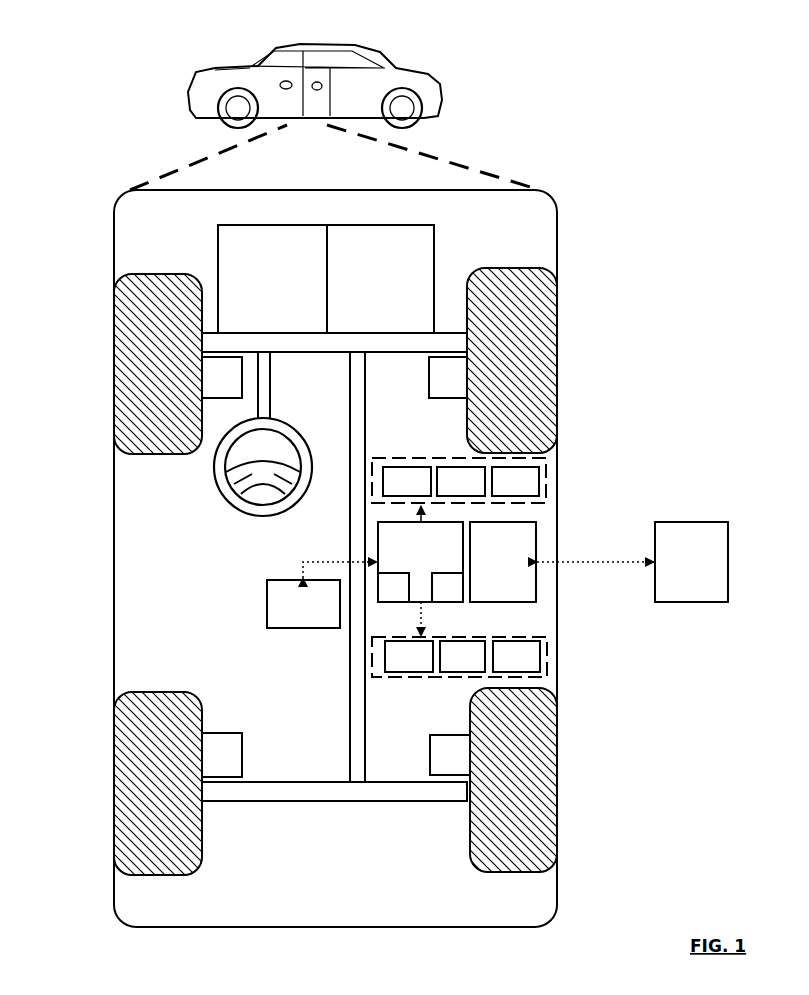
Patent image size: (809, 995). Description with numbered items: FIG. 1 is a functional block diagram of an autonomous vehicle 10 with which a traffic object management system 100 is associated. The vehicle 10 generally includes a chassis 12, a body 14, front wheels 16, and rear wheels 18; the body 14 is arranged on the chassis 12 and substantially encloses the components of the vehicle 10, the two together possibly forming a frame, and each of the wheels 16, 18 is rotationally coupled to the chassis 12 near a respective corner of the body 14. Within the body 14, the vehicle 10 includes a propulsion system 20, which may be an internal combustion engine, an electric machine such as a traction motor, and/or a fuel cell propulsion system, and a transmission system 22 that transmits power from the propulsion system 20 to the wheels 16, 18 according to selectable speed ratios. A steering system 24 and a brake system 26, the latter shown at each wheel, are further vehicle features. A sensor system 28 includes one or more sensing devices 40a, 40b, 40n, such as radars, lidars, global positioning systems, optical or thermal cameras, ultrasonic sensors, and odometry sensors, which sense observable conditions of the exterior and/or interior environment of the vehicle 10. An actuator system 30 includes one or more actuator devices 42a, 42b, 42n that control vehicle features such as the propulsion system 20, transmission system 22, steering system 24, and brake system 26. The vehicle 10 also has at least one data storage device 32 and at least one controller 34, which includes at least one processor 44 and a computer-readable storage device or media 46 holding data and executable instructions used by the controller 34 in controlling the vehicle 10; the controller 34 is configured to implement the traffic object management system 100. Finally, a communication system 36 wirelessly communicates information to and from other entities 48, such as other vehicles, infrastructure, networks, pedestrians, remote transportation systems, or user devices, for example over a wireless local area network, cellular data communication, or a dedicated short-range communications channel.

The vehicle 10 is at (190, 98).
The traffic object management system 100 is at (583, 202).
The chassis 12 is at (350, 720).
The body 14 is at (114, 546).
The front wheels 16 is at (158, 274).
The rear wheels 18 is at (176, 876).
The propulsion system 20 is at (272, 279).
The transmission system 22 is at (380, 279).
The steering system 24 is at (294, 376).
The brake system 26 is at (336, 567).
The sensor system 28 is at (386, 458).
The actuator system 30 is at (434, 676).
The data storage device 32 is at (303, 604).
The controller 34 is at (420, 562).
The communication system 36 is at (503, 562).
The sensing device 40a is at (407, 481).
The sensing device 40b is at (461, 481).
The sensing device 40n is at (515, 481).
The actuator device 42a is at (409, 656).
The actuator device 42b is at (462, 656).
The actuator device 42n is at (516, 656).
The processor 44 is at (393, 587).
The computer-readable storage device or media 46 is at (447, 587).
The other entities 48 is at (691, 562).